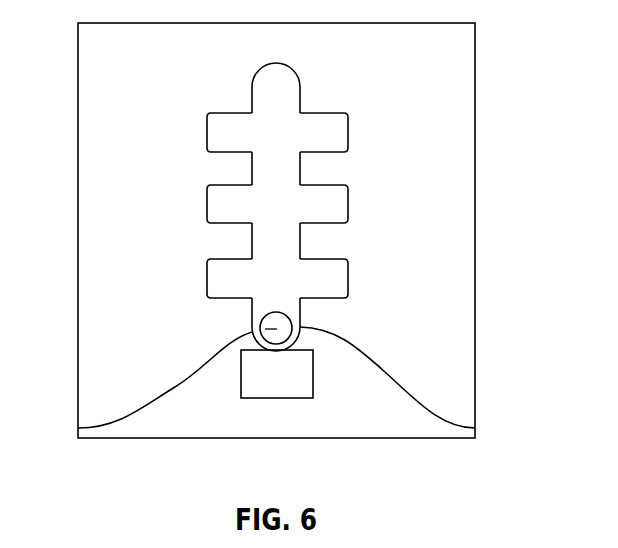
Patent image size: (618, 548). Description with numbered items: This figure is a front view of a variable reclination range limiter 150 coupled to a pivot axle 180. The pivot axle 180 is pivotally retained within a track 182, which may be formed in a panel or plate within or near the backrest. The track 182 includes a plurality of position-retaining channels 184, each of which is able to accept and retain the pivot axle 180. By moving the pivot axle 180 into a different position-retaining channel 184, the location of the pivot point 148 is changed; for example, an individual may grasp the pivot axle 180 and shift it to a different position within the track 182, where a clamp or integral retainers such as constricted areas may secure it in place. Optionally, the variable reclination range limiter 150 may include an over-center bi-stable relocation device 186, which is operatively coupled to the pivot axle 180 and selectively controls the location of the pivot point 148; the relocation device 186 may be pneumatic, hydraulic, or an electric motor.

The variable reclination range limiter 150 is at (514, 290).
The track 182 is at (393, 207).
The position-retaining channels 184 is at (213, 133).
The pivot point 148 is at (78, 428).
The pivot axle 180 is at (475, 428).
The over-center bi-stable relocation device 186 is at (218, 414).